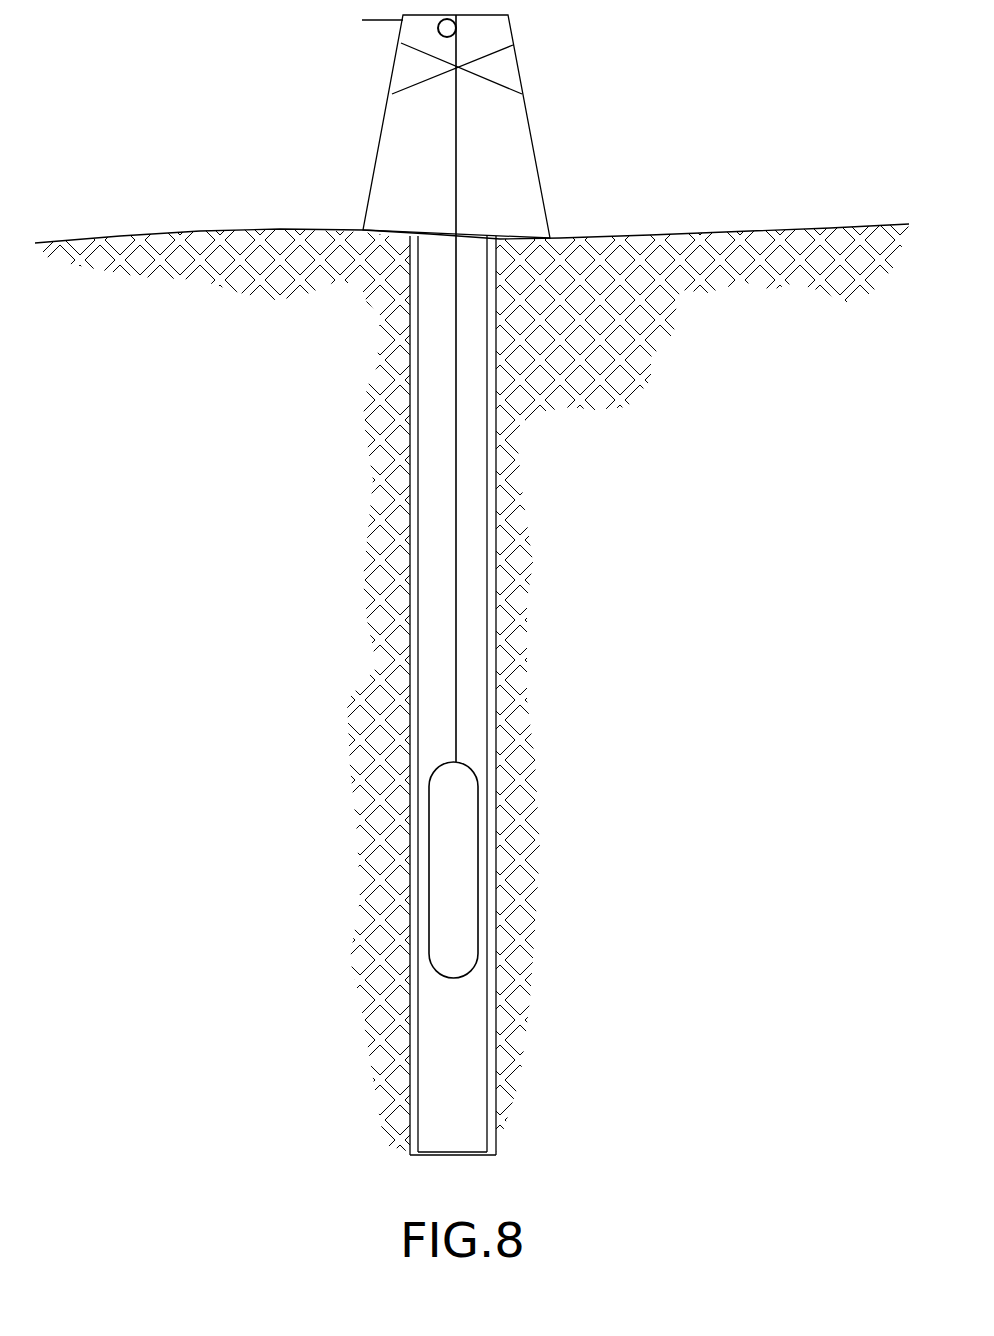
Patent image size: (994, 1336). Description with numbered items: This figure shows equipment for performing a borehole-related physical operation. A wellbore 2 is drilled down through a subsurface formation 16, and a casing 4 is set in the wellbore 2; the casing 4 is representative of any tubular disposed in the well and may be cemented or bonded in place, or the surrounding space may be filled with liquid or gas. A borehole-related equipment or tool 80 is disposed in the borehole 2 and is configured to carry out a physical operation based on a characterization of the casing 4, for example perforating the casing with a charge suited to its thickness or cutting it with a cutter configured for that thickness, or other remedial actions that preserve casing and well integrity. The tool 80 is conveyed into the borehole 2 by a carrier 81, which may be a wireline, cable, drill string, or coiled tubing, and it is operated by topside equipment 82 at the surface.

The wellbore 2 is at (480, 465).
The casing 4 is at (490, 553).
The subsurface formation 16 is at (633, 350).
The borehole-related equipment or tool 80 is at (472, 838).
The carrier 81 is at (457, 692).
The topside equipment 82 is at (548, 166).